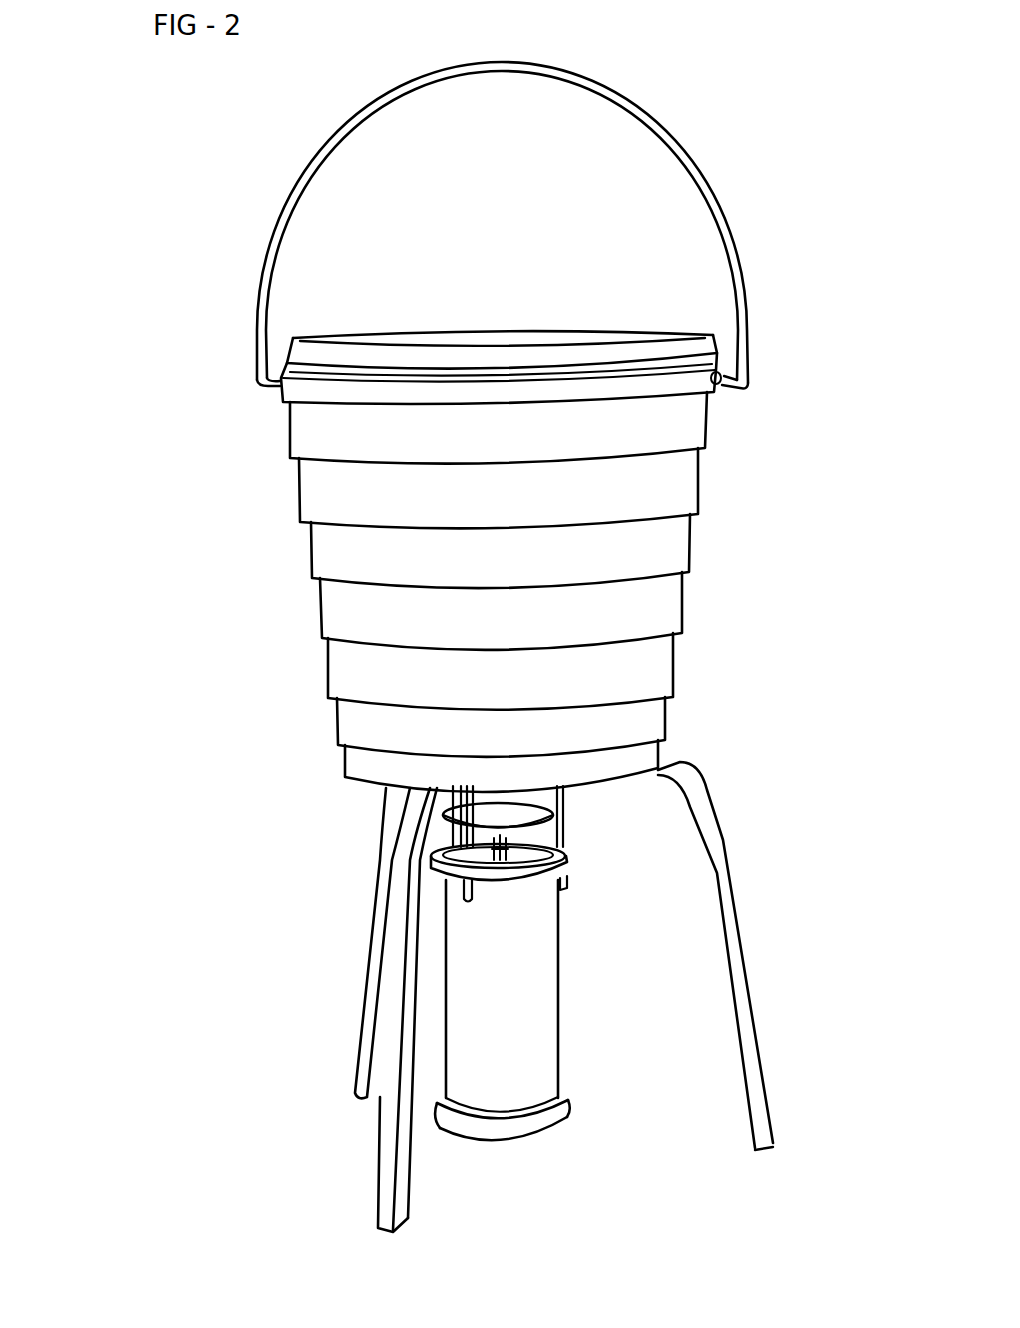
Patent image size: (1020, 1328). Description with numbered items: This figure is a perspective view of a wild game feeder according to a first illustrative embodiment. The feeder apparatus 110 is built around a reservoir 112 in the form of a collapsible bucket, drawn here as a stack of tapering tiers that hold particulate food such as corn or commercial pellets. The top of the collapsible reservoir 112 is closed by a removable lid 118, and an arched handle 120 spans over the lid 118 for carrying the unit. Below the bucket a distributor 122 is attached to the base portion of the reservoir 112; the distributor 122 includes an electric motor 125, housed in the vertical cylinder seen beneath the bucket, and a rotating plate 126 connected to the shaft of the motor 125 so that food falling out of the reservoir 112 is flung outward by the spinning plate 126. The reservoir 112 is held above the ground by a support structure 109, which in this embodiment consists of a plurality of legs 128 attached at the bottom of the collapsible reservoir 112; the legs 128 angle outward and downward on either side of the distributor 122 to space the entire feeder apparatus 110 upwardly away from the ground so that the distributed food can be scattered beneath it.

The support structure 109 is at (363, 825).
The feeder apparatus 110 is at (213, 790).
The reservoir 112 is at (715, 512).
The lid 118 is at (503, 333).
The handle 120 is at (643, 107).
The distributor 122 is at (592, 1013).
The electric motor 125 is at (523, 1021).
The rotating plate 126 is at (527, 811).
The legs 128 is at (730, 883).